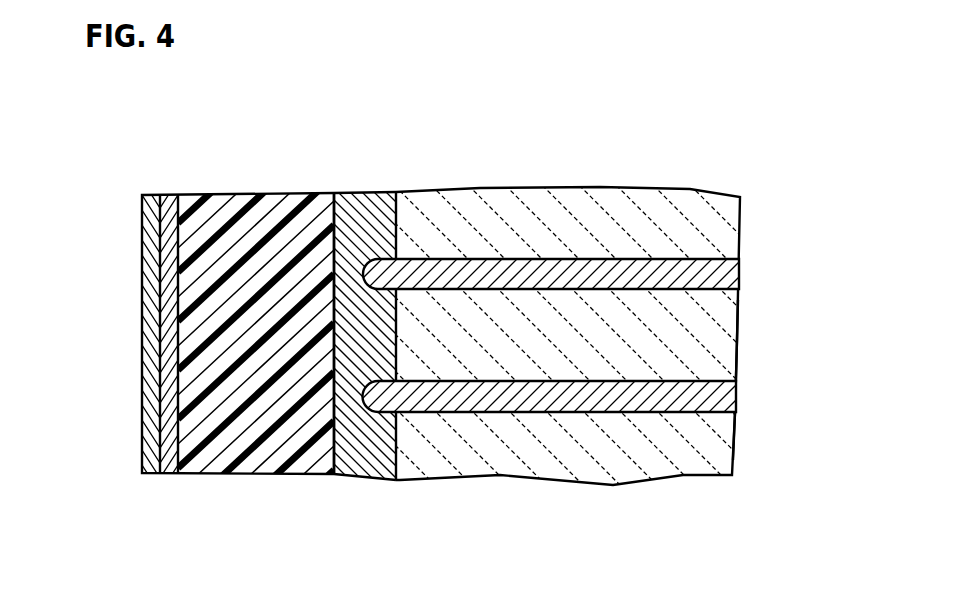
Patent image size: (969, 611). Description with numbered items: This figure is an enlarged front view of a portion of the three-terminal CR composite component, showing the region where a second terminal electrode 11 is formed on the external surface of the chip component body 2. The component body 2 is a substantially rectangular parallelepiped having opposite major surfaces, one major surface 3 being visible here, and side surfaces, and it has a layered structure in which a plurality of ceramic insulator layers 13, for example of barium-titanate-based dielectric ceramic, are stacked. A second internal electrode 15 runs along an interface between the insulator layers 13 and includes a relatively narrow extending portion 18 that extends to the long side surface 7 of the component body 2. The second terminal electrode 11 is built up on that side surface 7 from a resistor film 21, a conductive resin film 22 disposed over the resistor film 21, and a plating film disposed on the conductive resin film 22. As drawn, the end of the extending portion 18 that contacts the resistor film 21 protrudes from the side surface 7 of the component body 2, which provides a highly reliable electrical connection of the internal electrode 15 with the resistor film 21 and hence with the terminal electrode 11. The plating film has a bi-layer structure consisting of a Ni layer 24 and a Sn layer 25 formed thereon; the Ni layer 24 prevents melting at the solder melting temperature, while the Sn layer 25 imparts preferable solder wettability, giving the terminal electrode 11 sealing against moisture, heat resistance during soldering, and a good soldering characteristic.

The component body 2 is at (531, 296).
The major surface 3 is at (89, 329).
The side surface 7 is at (393, 444).
The second terminal electrode 11 is at (342, 344).
The insulator layers 13 is at (723, 427).
The second internal electrode 15 is at (553, 247).
The extending portion 18 is at (428, 265).
The resistor film 21 is at (367, 333).
The conductive resin film 22 is at (268, 198).
The Ni layer 24 is at (152, 328).
The Sn layer 25 is at (148, 389).